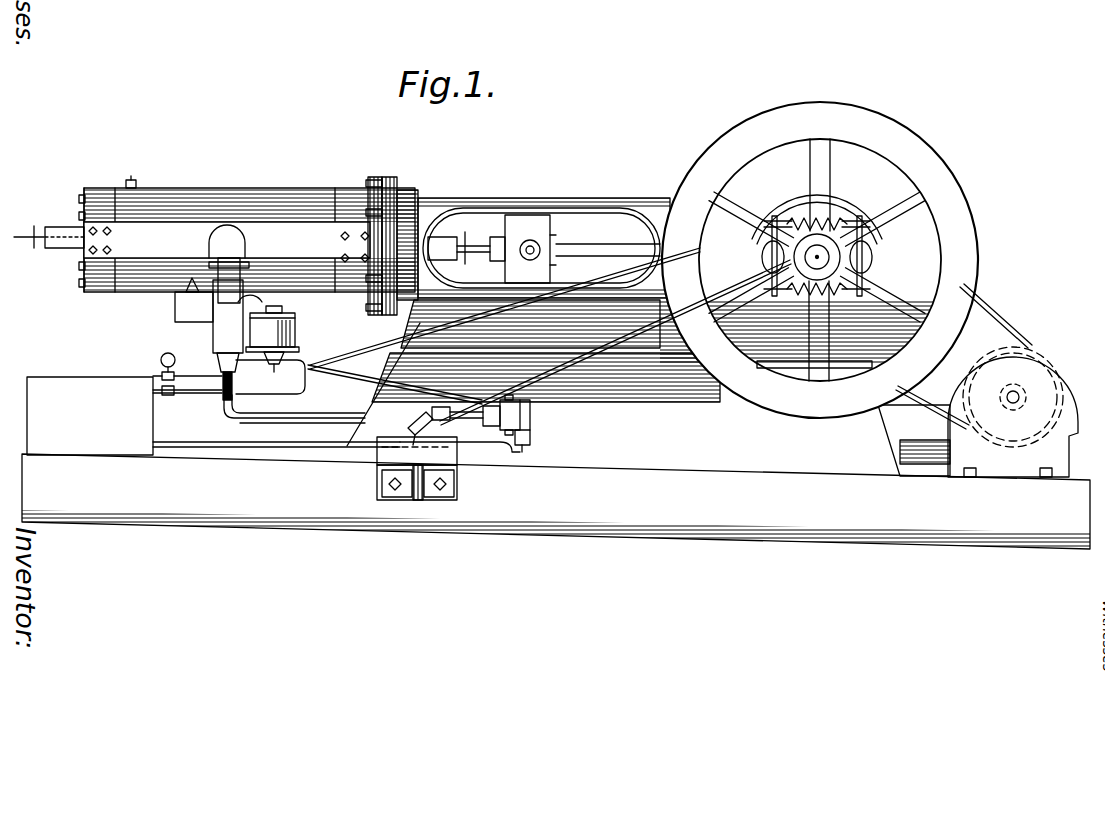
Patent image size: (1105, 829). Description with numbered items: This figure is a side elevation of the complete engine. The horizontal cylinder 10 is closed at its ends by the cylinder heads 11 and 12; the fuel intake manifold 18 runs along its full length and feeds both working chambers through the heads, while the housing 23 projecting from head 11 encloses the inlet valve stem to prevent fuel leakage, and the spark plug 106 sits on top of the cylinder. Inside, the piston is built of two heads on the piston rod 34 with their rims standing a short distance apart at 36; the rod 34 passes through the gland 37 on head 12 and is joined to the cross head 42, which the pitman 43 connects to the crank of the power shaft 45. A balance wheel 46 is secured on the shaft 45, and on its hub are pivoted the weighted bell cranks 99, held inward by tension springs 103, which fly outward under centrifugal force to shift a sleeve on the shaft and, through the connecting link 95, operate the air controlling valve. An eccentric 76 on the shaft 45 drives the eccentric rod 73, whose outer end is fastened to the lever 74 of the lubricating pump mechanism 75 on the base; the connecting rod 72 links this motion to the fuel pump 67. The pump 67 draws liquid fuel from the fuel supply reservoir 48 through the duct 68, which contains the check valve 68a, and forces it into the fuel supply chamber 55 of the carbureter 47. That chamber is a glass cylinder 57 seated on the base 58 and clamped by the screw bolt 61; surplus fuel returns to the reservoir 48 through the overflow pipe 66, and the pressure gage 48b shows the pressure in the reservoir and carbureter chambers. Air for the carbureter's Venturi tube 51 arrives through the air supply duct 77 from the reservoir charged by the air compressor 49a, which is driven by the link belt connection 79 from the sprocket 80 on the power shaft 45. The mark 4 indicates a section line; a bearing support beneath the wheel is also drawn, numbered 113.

The section line / intake direction 4 is at (239, 252).
The cylinder 10 is at (222, 196).
The cylinder head 11 is at (100, 188).
The cylinder head 12 is at (352, 192).
The fuel intake manifold 18 is at (158, 237).
The housing 23 is at (55, 230).
The piston rod 34 is at (496, 263).
The space between piston rims 36 is at (250, 264).
The gland 37 is at (452, 240).
The cross head 42 is at (532, 222).
The pitman 43 is at (598, 246).
The power shaft 45 is at (822, 250).
The balance wheel 46 is at (777, 104).
The carbureter 47 is at (210, 372).
The fuel supply reservoir 48 is at (82, 392).
The pressure gage 48b is at (167, 374).
The air compressor 49a is at (1022, 342).
The Venturi tube 51 is at (220, 404).
The fuel supply chamber 55 is at (296, 320).
The glass cylinder 57 is at (296, 337).
The base 58 is at (290, 358).
The screw bolt 61 is at (284, 308).
The overflow pipe 66 is at (306, 386).
The fuel pump 67 is at (428, 400).
The fuel duct 68 is at (320, 450).
The check valve 68a is at (482, 404).
The connecting rod 72 is at (460, 420).
The eccentric rod 73 is at (615, 342).
The lever 74 is at (414, 426).
The lubricating pump mechanism 75 is at (398, 460).
The eccentric 76 is at (790, 209).
The air supply duct 77 is at (276, 423).
The link belt connection 79 is at (975, 302).
The sprocket 80 is at (876, 265).
The connecting link 95 is at (604, 282).
The weighted bell crank 99 is at (758, 261).
The tension spring 103 is at (840, 236).
The spark plug 106 is at (137, 176).
The bearing pedestal 113 is at (775, 340).